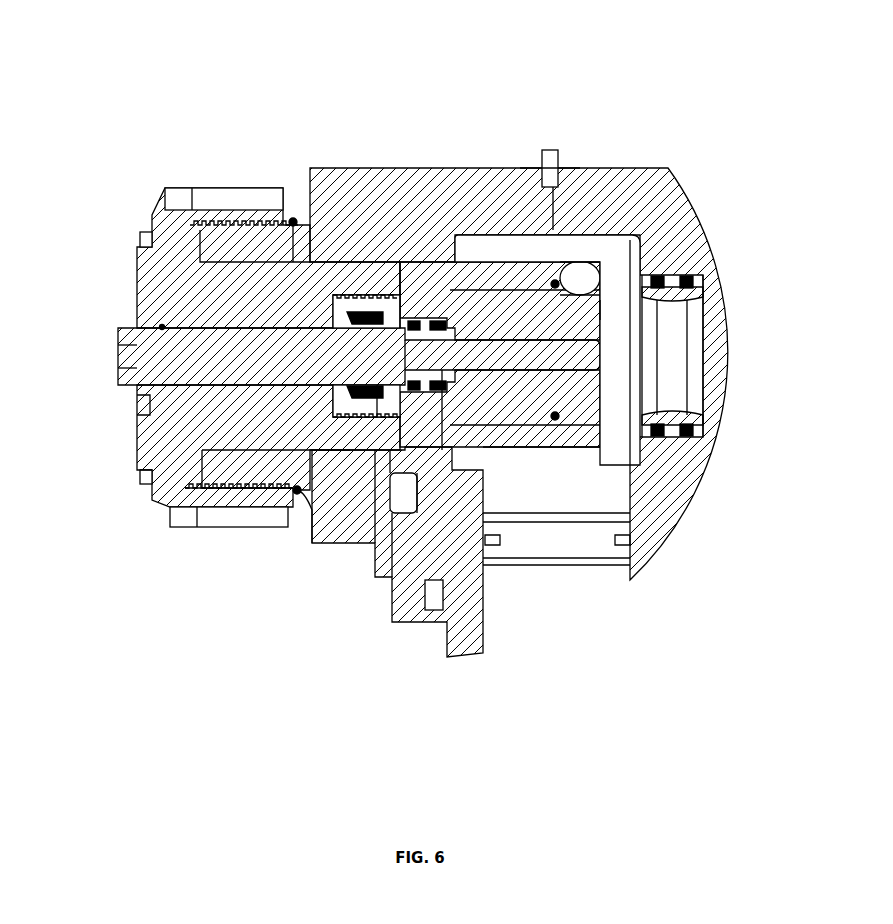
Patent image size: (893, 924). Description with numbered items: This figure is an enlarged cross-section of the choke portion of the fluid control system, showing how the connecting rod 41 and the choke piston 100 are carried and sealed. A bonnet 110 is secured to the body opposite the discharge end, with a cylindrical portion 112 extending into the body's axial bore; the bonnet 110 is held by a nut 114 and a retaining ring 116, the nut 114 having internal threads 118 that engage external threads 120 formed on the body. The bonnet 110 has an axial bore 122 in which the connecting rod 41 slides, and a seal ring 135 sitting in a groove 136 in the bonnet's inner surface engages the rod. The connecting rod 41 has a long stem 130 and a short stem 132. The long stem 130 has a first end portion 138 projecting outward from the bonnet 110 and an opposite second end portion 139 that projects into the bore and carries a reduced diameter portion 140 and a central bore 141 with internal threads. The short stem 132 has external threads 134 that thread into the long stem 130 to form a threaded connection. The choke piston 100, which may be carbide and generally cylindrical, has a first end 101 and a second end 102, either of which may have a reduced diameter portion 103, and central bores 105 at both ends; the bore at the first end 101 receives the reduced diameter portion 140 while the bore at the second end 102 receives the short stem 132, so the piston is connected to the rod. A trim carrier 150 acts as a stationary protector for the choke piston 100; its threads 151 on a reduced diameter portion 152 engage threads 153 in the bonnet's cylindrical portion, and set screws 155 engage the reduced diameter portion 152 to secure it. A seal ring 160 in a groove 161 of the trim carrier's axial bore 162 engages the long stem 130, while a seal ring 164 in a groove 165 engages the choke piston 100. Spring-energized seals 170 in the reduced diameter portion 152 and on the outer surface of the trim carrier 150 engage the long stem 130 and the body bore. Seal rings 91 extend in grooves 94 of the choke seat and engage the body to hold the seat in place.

The connecting rod 41 is at (132, 353).
The seal rings 91 is at (686, 432).
The grooves 94 is at (667, 280).
The choke piston 100 is at (553, 165).
The first end 101 is at (642, 262).
The second end 102 is at (418, 255).
The reduced diameter portion 103 is at (600, 307).
The central bores 105 is at (483, 297).
The bonnet 110 is at (162, 262).
The cylindrical portion 112 is at (297, 185).
The nut 114 is at (160, 518).
The retaining ring 116 is at (148, 475).
The internal threads 118 is at (213, 528).
The external threads 120 is at (255, 505).
The axial bore 122 is at (132, 368).
The long stem 130 is at (140, 415).
The short stem 132 is at (393, 518).
The external threads 134 is at (418, 503).
The seal ring 135 is at (150, 322).
The groove 136 is at (162, 327).
The first end portion 138 is at (120, 357).
The second end portion 139 is at (378, 480).
The reduced diameter portion 140 is at (443, 373).
The central bore 141 is at (374, 300).
The trim carrier 150 is at (553, 443).
The threads 151 is at (368, 313).
The reduced diameter portion 152 is at (372, 397).
The threads 153 is at (357, 313).
The set screws 155 is at (392, 470).
The seal ring 160 is at (380, 402).
The groove 161 is at (380, 315).
The axial bore 162 is at (556, 283).
The seal ring 164 is at (562, 248).
The groove 165 is at (588, 293).
The seals 170 is at (390, 315).